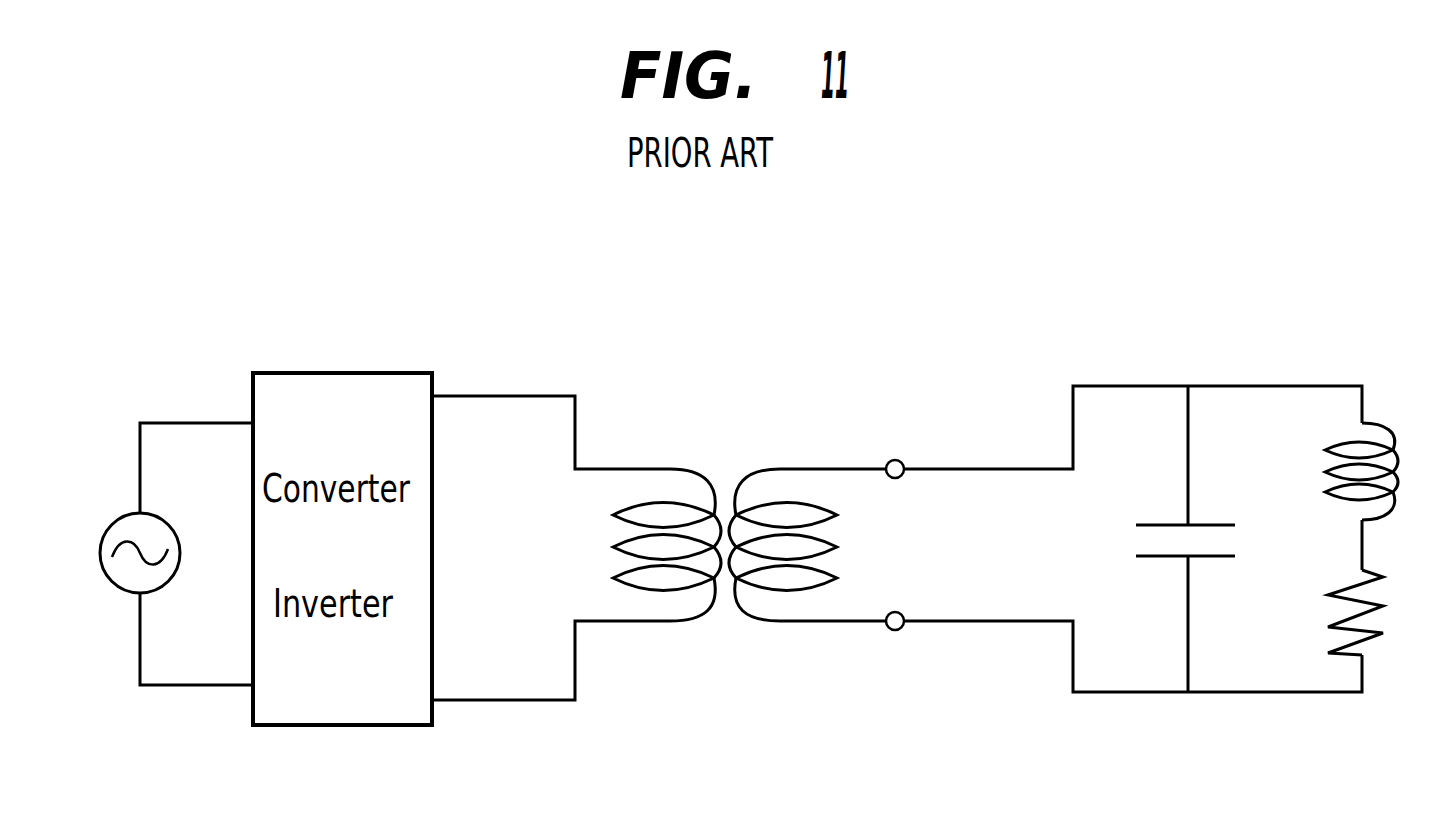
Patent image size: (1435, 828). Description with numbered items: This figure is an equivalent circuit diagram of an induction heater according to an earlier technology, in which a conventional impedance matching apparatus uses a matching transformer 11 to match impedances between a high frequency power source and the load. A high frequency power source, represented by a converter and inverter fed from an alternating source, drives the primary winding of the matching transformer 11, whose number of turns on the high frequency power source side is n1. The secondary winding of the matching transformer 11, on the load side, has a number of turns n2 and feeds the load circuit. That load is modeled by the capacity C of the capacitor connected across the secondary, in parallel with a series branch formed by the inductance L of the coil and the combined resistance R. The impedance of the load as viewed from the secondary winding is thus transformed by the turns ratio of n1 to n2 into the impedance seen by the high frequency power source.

The matching transformer 11 is at (813, 496).
The number of turns on the primary winding n1 is at (648, 545).
The number of turns on the secondary winding n2 is at (802, 545).
The capacity of the capacitor C is at (1185, 539).
The inductance of the coil L is at (1377, 496).
The combined resistance R is at (1379, 612).